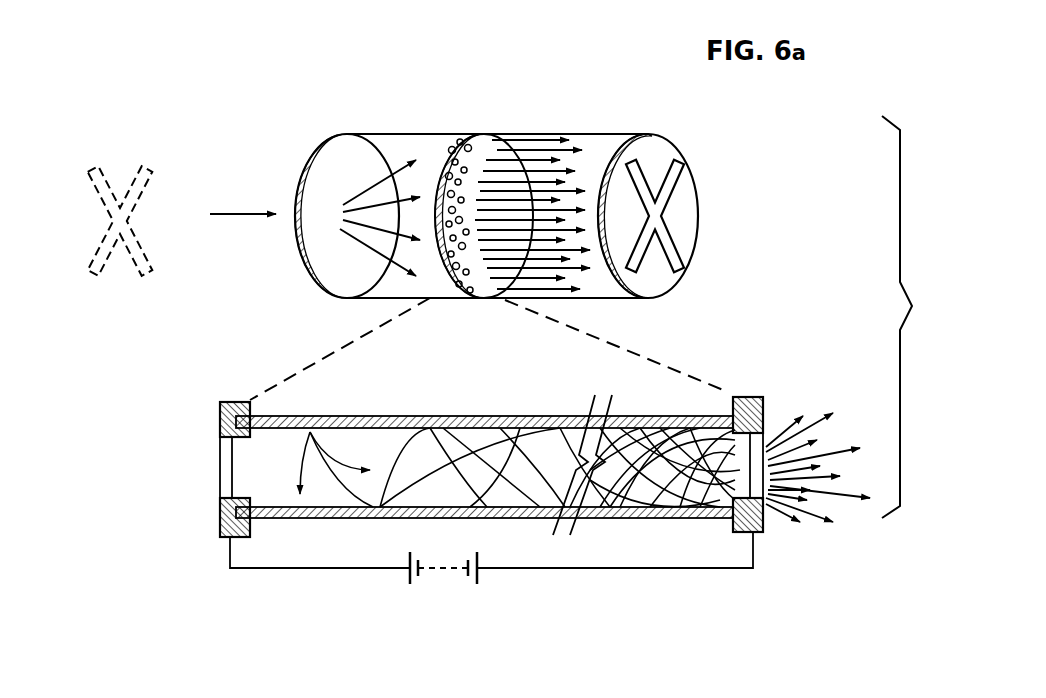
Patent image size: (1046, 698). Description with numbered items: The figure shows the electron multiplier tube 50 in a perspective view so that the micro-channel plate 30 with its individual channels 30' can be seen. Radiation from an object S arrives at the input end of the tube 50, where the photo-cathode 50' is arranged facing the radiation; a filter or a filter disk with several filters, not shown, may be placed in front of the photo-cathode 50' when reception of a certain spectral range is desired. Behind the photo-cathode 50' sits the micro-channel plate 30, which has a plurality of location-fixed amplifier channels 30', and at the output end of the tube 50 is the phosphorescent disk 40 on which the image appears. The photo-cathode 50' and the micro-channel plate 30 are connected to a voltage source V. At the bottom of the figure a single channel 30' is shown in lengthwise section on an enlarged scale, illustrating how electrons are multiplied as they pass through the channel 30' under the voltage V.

The electron multiplier tube 50 is at (497, 152).
The photo-cathode 50' is at (321, 178).
The micro-channel plate 30 is at (484, 180).
The amplifier channel 30' is at (545, 313).
The phosphorescent disk 40 is at (653, 143).
The object / source S is at (149, 171).
The voltage source V is at (491, 568).